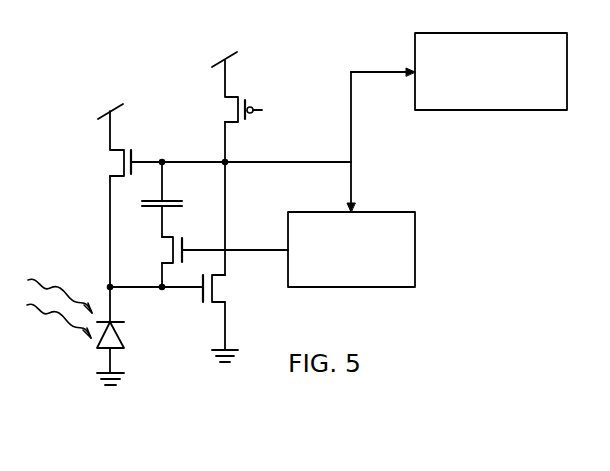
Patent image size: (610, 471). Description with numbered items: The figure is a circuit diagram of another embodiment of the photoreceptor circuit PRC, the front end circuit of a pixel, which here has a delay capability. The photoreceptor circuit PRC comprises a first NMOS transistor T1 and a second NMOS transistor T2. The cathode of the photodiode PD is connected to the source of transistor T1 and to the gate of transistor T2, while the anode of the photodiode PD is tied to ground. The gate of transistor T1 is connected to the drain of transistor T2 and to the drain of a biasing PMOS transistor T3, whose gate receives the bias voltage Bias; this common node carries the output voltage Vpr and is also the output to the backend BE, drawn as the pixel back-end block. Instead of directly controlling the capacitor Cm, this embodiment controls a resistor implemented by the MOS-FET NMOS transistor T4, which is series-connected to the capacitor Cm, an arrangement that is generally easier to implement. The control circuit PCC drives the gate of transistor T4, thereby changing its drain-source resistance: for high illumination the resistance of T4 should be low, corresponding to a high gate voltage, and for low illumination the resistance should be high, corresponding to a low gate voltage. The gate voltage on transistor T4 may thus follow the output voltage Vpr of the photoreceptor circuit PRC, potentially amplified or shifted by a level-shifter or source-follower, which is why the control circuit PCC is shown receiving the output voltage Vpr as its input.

The photoreceptor circuit PRC is at (137, 94).
The first NMOS transistor T1 is at (124, 165).
The second NMOS transistor T2 is at (212, 293).
The biasing PMOS transistor T3 is at (238, 113).
The MOS-FET NMOS transistor T4 is at (173, 254).
The capacitor Cm is at (148, 203).
The photodiode PD is at (123, 342).
The backend BE is at (480, 95).
The control circuit PCC is at (366, 271).
The output voltage Vpr is at (387, 162).
The bias voltage Bias is at (286, 111).